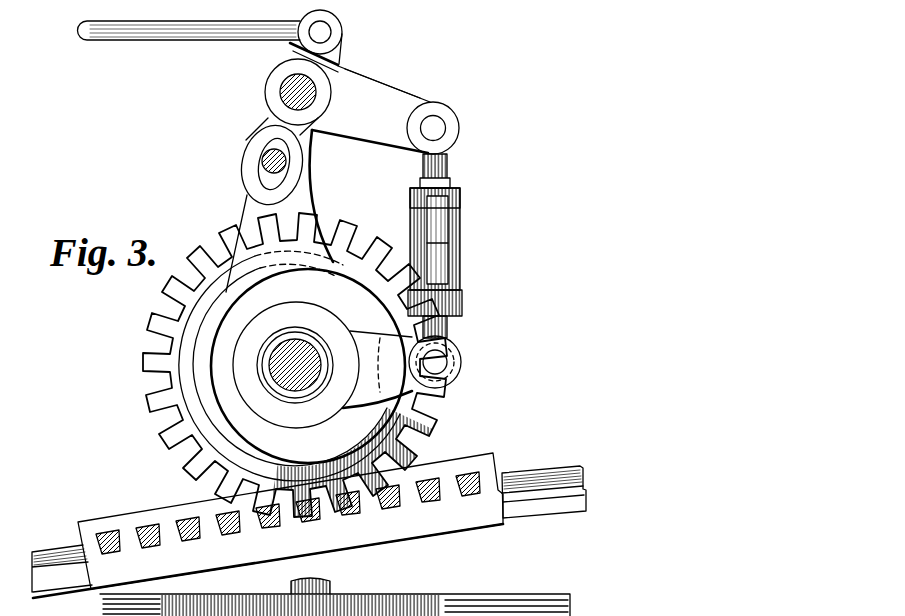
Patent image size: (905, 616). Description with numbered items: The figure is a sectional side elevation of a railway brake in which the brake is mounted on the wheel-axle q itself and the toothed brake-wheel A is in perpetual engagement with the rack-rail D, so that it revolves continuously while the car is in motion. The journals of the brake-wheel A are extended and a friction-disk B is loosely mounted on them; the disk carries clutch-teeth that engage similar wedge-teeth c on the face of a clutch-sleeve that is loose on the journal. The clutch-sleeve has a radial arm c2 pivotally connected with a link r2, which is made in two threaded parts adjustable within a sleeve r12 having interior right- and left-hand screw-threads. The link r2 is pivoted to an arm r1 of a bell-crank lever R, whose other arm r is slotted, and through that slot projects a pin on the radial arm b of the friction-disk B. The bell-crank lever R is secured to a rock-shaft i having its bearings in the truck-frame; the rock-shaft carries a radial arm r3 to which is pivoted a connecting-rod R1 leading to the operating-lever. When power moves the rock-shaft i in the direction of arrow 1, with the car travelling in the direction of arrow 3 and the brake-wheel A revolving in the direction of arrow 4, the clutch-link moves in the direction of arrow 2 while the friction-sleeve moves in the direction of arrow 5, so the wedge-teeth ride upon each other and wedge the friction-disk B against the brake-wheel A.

The brake-wheel A is at (186, 388).
The friction-disk B is at (308, 366).
The wheel-axle q is at (298, 360).
The radial arm of the friction-cones b is at (306, 192).
The slotted arm of the bell-crank lever r is at (302, 158).
The rock-shaft i is at (268, 92).
The connecting-rod R1 is at (168, 51).
The radial arm of the rock-shaft r3 is at (328, 31).
The arrow indicating direction of rock-shaft movement 1 is at (358, 46).
The bell-crank lever R is at (385, 110).
The arm of the bell-crank lever r1 is at (384, 90).
The link r2 is at (449, 161).
The sleeve r12 is at (466, 272).
The arrow indicating direction of clutch-link movement 2 is at (470, 215).
The clutch-teeth on the clutch-sleeve c is at (374, 369).
The radial arm of the clutch-sleeve c2 is at (412, 362).
The arrow indicating direction of car movement 3 is at (560, 324).
The arrow indicating direction of brake-wheel rotation 4 is at (125, 322).
The arrow indicating direction of friction-sleeve movement 5 is at (232, 172).
The rack-rail D is at (423, 470).